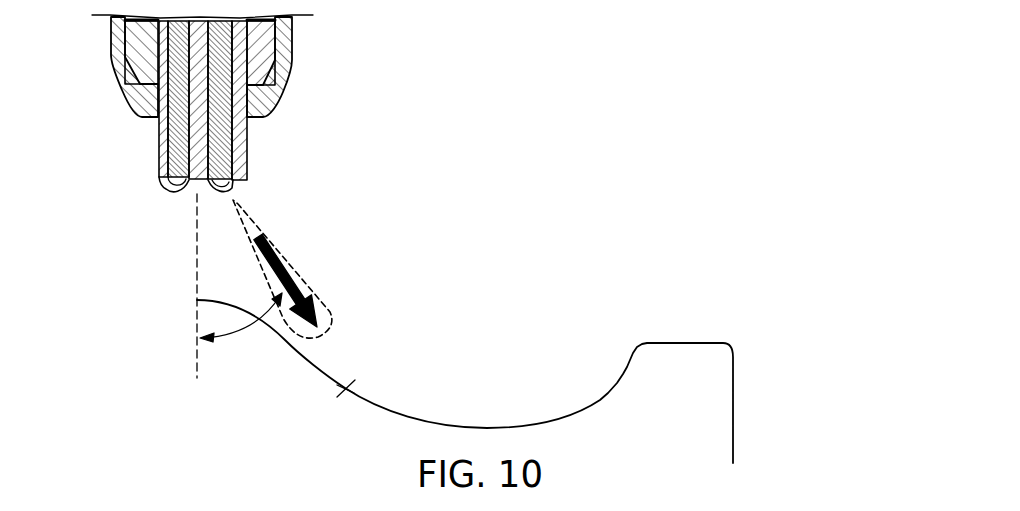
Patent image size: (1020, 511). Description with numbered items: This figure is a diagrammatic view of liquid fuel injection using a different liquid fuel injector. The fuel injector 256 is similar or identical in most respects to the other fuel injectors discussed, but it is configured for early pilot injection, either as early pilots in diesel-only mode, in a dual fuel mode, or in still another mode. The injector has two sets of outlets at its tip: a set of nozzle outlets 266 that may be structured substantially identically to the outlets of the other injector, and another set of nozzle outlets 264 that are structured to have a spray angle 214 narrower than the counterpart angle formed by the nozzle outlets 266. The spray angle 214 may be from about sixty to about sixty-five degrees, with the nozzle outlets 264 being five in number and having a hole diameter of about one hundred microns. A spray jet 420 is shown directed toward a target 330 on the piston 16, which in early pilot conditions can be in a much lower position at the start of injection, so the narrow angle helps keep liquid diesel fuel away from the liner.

The fuel injector 256 is at (293, 90).
The nozzle outlets 264 is at (160, 188).
The nozzle outlets 266 is at (232, 188).
The spray jet 420 is at (285, 247).
The spray angle 214 is at (247, 333).
The target 330 is at (344, 392).
The piston 16 is at (733, 405).